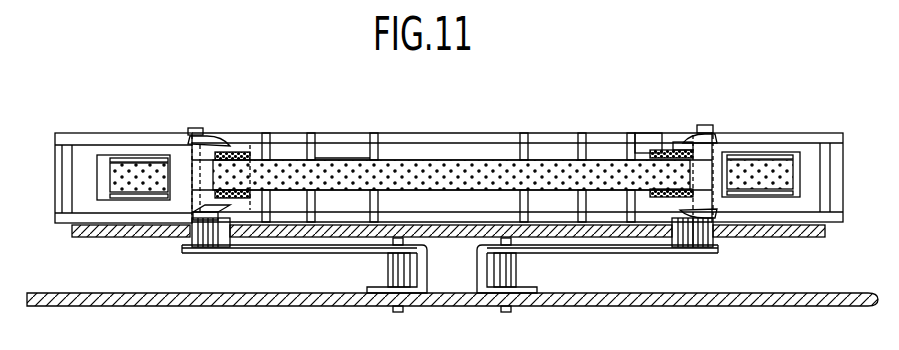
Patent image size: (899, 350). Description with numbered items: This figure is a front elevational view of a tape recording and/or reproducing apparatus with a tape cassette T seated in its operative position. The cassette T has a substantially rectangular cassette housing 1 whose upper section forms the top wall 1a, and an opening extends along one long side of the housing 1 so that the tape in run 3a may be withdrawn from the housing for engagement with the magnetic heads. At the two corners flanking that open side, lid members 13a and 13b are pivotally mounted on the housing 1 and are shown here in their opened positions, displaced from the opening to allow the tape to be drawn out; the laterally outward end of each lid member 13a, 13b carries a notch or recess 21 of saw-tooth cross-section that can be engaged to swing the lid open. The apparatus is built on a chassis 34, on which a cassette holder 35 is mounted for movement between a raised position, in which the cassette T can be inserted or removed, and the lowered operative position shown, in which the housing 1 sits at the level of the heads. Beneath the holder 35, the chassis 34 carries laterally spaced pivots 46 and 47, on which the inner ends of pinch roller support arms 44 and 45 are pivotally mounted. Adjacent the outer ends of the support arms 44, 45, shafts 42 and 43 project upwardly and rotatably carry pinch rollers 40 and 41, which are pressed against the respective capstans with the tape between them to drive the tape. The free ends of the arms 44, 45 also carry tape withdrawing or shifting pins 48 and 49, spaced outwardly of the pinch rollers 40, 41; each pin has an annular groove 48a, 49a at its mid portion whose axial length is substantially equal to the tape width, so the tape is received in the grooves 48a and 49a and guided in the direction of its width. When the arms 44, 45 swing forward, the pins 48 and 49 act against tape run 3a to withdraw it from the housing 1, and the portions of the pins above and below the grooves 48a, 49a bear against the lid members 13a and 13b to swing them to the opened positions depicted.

The lid member 13a is at (112, 129).
The lid member 13b is at (830, 126).
The notch or recess 21 is at (68, 170).
The tape cassette T is at (622, 130).
The cassette housing 1 is at (643, 130).
The top wall 1a is at (415, 123).
The tape run 3a is at (432, 168).
The pinch roller 40 is at (240, 150).
The pinch roller 41 is at (668, 147).
The annular groove 48a is at (185, 160).
The annular groove 49a is at (765, 128).
The cassette holder 35 is at (130, 246).
The tape withdrawing or shifting pin 48 is at (192, 243).
The shaft 42 is at (213, 240).
The shaft 43 is at (677, 247).
The tape withdrawing or shifting pin 49 is at (700, 247).
The pinch roller support arm 44 is at (300, 250).
The pinch roller support arm 45 is at (612, 250).
The pivot 46 is at (396, 272).
The pivot 47 is at (506, 271).
The chassis 34 is at (781, 293).